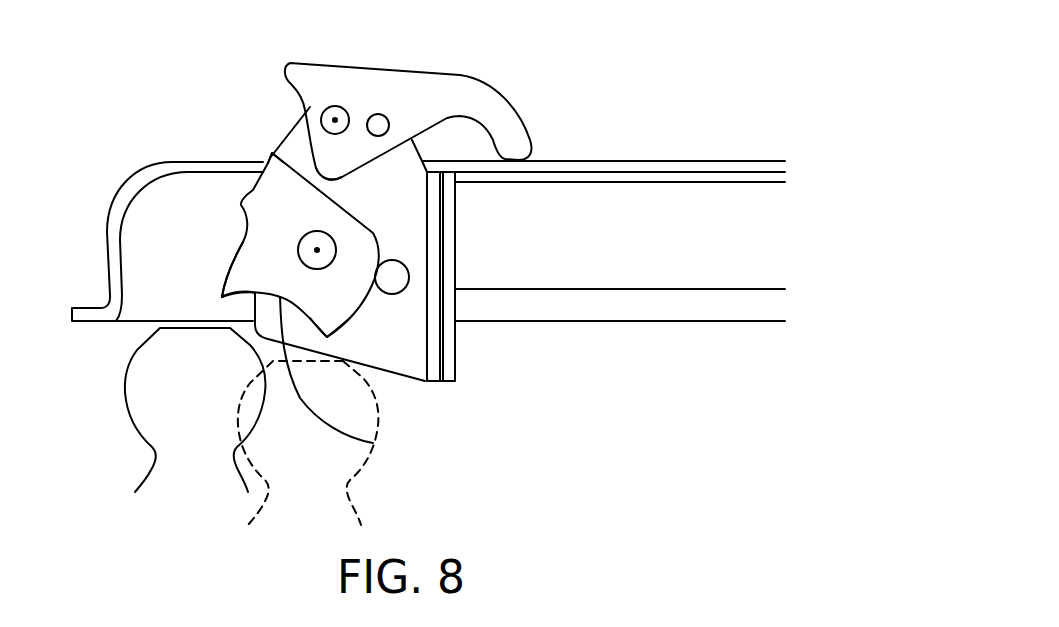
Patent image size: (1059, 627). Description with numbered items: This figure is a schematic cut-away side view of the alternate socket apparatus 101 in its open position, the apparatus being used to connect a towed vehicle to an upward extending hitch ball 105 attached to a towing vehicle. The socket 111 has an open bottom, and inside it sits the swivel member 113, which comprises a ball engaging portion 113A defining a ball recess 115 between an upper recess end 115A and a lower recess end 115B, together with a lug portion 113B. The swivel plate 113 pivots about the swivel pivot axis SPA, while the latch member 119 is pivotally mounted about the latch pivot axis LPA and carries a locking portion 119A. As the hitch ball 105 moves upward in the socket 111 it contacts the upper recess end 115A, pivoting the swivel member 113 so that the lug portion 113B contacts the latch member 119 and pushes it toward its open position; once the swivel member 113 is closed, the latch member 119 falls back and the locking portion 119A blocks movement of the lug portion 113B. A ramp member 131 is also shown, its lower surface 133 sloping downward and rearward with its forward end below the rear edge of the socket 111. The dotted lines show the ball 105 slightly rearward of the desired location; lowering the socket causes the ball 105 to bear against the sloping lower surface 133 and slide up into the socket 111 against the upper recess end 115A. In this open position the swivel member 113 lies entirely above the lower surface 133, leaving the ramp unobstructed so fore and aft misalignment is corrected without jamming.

The socket apparatus 101 is at (568, 93).
The hitch ball 105 is at (122, 389).
The socket 111 is at (148, 210).
The swivel member 113 is at (372, 228).
The ball engaging portion 113A is at (275, 287).
The lug portion 113B is at (279, 167).
The ball recess 115 is at (373, 443).
The upper recess end 115A is at (222, 297).
The lower recess end 115B is at (323, 337).
The latch member 119 is at (415, 67).
The locking portion 119A is at (342, 172).
The ramp member 131 is at (455, 348).
The lower surface 133 is at (393, 375).
The latch pivot axis LPA is at (335, 120).
The swivel pivot axis SPA is at (318, 248).